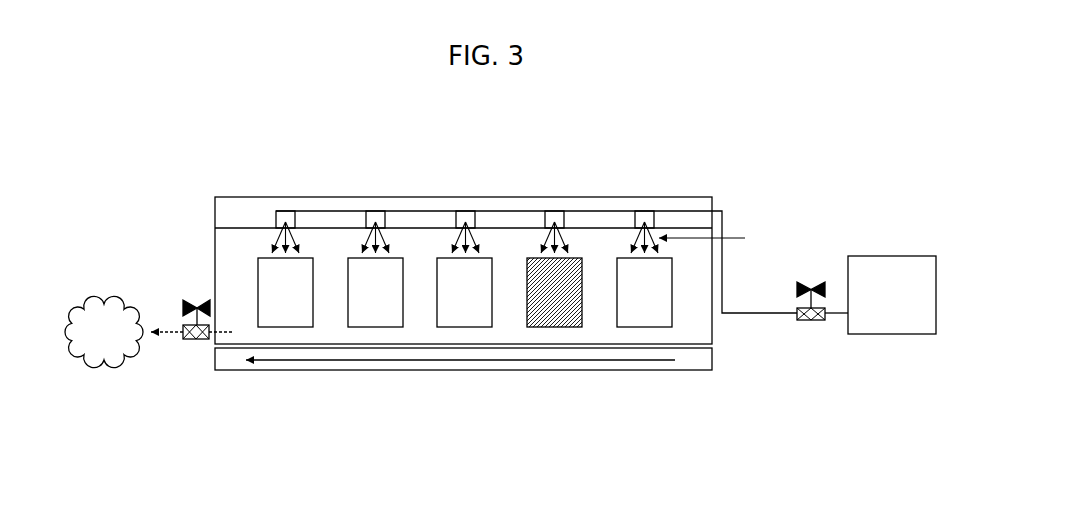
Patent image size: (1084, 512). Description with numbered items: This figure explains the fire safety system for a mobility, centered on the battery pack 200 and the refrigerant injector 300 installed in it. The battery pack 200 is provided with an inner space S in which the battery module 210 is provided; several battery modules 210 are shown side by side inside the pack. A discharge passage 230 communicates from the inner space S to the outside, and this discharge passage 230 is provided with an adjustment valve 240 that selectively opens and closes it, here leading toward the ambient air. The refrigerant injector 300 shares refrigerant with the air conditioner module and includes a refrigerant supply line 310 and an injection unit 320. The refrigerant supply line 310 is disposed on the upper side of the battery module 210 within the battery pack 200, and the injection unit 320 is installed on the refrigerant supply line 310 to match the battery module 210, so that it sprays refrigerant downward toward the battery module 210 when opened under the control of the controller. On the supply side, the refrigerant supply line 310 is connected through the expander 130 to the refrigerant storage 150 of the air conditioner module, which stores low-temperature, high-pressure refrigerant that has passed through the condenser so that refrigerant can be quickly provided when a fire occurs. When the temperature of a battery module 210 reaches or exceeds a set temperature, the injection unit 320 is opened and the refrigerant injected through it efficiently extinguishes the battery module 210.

The battery pack 200 is at (485, 192).
The refrigerant injector 300 is at (534, 207).
The refrigerant supply line 310 is at (618, 210).
The injection unit 320 is at (647, 134).
The battery module 210 is at (378, 302).
The inner space S is at (499, 304).
The discharge passage 230 is at (172, 330).
The adjustment valve 240 is at (195, 342).
The expander 130 is at (803, 321).
The refrigerant storage 150 is at (889, 264).